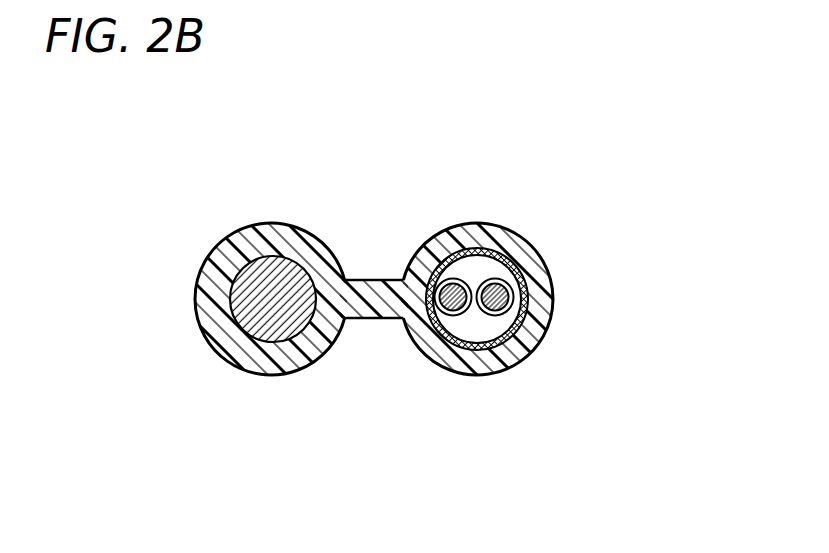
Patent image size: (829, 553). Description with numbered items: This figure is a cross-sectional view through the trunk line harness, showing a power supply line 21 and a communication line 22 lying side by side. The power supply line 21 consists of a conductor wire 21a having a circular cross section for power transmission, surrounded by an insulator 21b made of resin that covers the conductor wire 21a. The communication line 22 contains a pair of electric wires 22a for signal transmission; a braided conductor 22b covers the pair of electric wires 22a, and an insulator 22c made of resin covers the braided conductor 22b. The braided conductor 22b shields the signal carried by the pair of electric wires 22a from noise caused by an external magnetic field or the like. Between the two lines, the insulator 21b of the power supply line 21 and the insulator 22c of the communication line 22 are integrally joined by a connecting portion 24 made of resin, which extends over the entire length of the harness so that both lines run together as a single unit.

The power supply line 21 is at (338, 137).
The conductor wire 21a is at (256, 277).
The insulator 21b is at (277, 232).
The communication line 22 is at (378, 137).
The pair of electric wires 22a is at (491, 283).
The braided conductor 22b is at (495, 279).
The insulator 22c is at (523, 240).
The connecting portion 24 is at (367, 318).